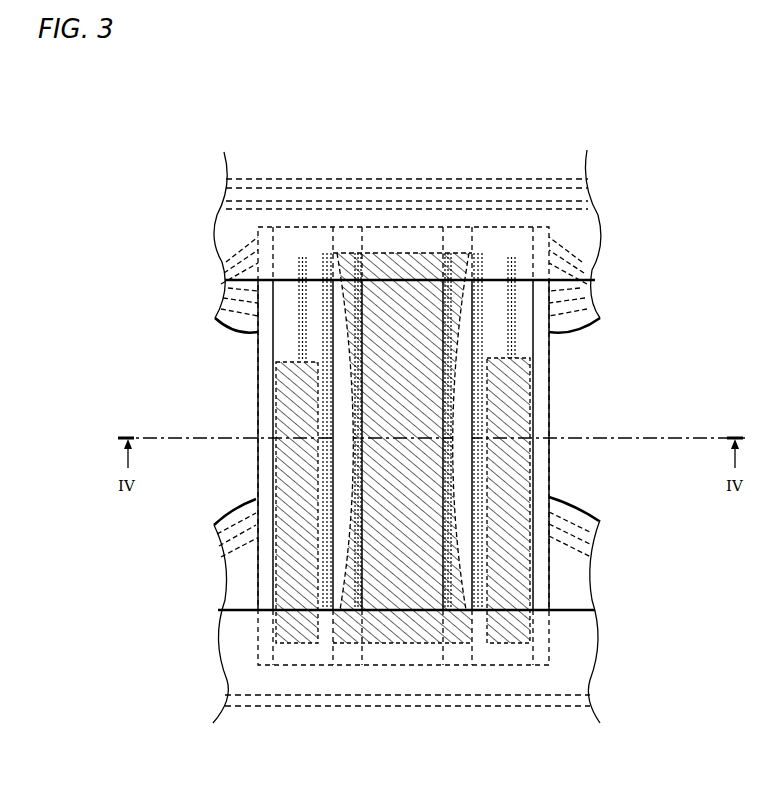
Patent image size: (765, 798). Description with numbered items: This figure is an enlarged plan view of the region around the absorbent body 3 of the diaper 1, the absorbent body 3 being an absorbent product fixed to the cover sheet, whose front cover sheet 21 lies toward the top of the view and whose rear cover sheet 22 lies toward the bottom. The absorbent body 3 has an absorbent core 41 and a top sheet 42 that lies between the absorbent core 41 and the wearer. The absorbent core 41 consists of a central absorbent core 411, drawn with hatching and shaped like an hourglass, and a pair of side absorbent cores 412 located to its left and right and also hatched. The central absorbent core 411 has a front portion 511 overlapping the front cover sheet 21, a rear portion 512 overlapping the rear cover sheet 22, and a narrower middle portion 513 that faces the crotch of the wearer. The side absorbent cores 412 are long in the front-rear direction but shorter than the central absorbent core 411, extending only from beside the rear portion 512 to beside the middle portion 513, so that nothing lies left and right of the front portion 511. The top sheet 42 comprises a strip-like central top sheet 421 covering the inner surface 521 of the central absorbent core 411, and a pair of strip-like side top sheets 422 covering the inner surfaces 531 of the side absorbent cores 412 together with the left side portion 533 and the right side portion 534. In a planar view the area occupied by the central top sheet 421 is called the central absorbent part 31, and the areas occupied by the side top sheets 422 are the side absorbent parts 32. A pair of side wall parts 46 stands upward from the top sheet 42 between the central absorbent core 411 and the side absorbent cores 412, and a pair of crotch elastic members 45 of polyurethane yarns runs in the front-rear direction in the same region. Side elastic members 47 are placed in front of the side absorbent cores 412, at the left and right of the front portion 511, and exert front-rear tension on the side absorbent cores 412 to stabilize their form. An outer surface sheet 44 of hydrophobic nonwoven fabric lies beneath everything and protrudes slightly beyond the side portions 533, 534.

The diaper 1 is at (235, 102).
The absorbent body 3 is at (378, 115).
The front cover sheet 21 is at (592, 198).
The rear cover sheet 22 is at (596, 678).
The central absorbent part 31 is at (401, 225).
The side absorbent parts 32 is at (306, 225).
The absorbent core 41 is at (702, 346).
The top sheet 42 is at (684, 597).
The outer surface sheet 44 is at (263, 600).
The crotch elastic members 45 is at (499, 464).
The side wall parts 46 is at (345, 613).
The side elastic members 47 is at (284, 322).
The central absorbent core 411 is at (548, 345).
The side absorbent cores 412 is at (275, 365).
The central top sheet 421 is at (410, 540).
The side top sheets 422 is at (300, 537).
The front portion 511 is at (457, 292).
The rear portion 512 is at (530, 637).
The middle portion 513 is at (593, 521).
The inner surface 521 is at (482, 480).
The inner surfaces 531 is at (300, 422).
The left side portion 533 is at (266, 395).
The right side portion 534 is at (546, 405).